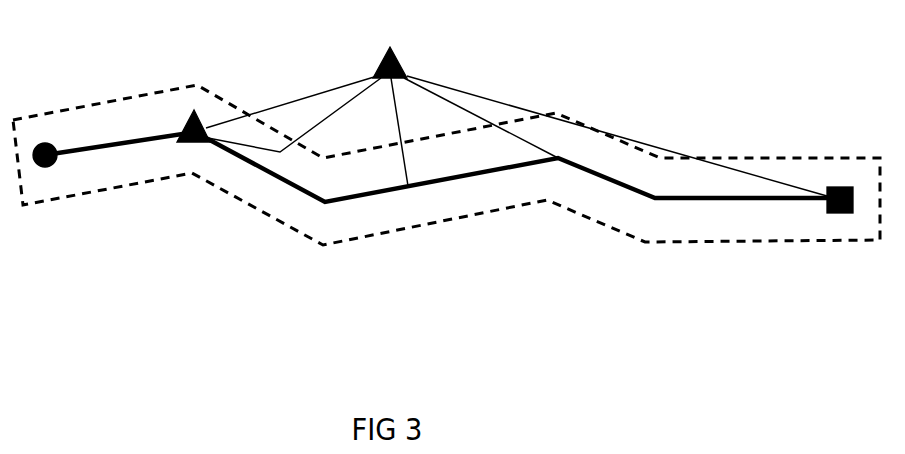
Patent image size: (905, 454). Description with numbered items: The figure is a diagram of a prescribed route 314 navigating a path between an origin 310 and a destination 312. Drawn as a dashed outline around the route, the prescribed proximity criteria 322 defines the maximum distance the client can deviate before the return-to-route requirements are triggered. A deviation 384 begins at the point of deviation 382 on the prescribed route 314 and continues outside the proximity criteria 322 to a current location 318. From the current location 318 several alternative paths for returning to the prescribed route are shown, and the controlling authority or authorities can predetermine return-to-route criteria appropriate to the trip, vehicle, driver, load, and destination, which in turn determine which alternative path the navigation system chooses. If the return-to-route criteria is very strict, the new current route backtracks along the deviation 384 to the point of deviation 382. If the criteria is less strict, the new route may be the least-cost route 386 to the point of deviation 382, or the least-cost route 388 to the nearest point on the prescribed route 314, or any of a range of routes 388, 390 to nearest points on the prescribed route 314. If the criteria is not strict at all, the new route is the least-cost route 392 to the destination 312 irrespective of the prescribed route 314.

The origin 310 is at (49, 156).
The destination 312 is at (838, 201).
The prescribed route 314 is at (442, 172).
The current location 318 is at (383, 44).
The prescribed proximity criteria 322 is at (446, 178).
The point of deviation 382 is at (196, 158).
The deviation 384 is at (294, 115).
The least-cost route to the point of deviation 386 is at (290, 102).
The least-cost route to the nearest point on the prescribed route 388 is at (388, 132).
The least-cost route to a nearest point on the prescribed route 390 is at (481, 118).
The least-cost route to the destination 392 is at (617, 136).